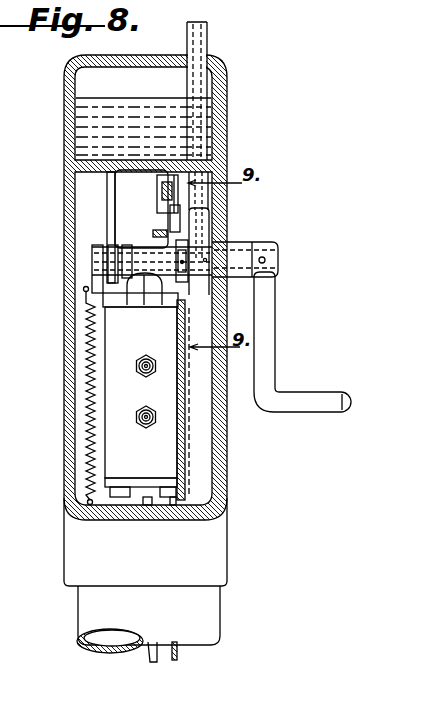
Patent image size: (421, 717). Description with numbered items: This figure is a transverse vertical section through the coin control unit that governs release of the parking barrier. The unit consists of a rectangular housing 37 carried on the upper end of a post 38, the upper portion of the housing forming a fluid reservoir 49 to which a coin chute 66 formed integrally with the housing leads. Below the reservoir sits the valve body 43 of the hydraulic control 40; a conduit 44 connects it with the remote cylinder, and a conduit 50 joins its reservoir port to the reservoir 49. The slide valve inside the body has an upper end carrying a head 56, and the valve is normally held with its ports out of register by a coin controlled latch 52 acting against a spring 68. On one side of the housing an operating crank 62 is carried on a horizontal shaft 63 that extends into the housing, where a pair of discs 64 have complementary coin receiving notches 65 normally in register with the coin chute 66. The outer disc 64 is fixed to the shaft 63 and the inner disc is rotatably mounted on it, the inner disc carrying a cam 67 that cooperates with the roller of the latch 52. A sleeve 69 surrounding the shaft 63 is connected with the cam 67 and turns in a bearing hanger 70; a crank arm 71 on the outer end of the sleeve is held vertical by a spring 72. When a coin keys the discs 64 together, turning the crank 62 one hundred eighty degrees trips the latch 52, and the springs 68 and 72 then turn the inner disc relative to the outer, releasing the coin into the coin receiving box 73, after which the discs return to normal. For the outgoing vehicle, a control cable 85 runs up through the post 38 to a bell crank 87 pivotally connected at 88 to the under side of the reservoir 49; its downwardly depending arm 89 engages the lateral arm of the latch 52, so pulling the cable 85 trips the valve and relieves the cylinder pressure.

The housing 37 is at (226, 112).
The post 38 is at (212, 612).
The hydraulic control 40 is at (156, 436).
The valve body 43 is at (102, 423).
The conduit 44 is at (139, 374).
The reservoir 49 is at (77, 90).
The conduit 50 is at (140, 426).
The coin controlled latch 52 is at (167, 176).
The head 56 is at (128, 302).
The operating crank 62 is at (309, 398).
The horizontal shaft 63 is at (236, 255).
The discs 64 is at (218, 236).
The coin receiving notches 65 is at (222, 206).
The coin chute 66 is at (214, 125).
The cam 67 is at (184, 283).
The spring 68 is at (153, 234).
The sleeve 69 is at (153, 302).
The bearing hanger 70 is at (108, 238).
The crank arm 71 is at (110, 279).
The spring 72 is at (84, 305).
The coin receiving box 73 is at (203, 462).
The control cable 85 is at (180, 658).
The bell crank 87 is at (163, 215).
The pivotal connection 88 is at (157, 197).
The downwardly depending arm 89 is at (172, 225).